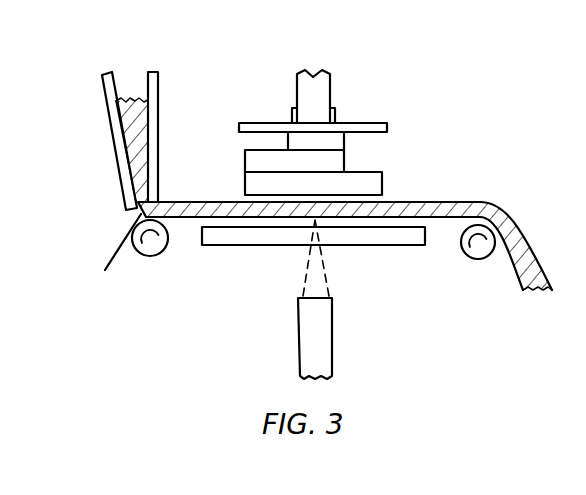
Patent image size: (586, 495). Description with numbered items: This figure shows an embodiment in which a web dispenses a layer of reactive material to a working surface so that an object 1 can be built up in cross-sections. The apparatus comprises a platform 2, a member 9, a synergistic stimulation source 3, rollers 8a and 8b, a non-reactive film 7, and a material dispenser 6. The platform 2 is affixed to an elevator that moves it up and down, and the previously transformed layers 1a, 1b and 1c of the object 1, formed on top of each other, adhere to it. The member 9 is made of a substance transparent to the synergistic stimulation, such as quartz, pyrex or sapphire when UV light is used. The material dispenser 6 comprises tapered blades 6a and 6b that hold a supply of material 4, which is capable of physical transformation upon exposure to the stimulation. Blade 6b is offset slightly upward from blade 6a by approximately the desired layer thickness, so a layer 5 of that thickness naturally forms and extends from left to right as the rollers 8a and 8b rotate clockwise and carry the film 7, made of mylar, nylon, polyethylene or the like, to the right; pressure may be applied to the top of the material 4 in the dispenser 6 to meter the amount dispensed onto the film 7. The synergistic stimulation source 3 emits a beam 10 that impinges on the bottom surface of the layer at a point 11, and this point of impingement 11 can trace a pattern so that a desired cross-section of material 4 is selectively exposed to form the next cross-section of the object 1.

The object 1 is at (360, 158).
The previously transformed layer 1a is at (383, 184).
The previously transformed layer 1b is at (345, 162).
The previously transformed layer 1c is at (345, 143).
The platform 2 is at (378, 123).
The synergistic stimulation source 3 is at (333, 327).
The material 4 is at (118, 99).
The layer 5 is at (205, 201).
The material dispenser 6 is at (124, 121).
The blade 6a is at (103, 76).
The blade 6b is at (158, 76).
The non-reactive film 7 is at (127, 226).
The roller 8a is at (145, 256).
The roller 8b is at (465, 258).
The member 9 is at (226, 243).
The beam 10 is at (303, 278).
The point of impingement 11 is at (315, 218).